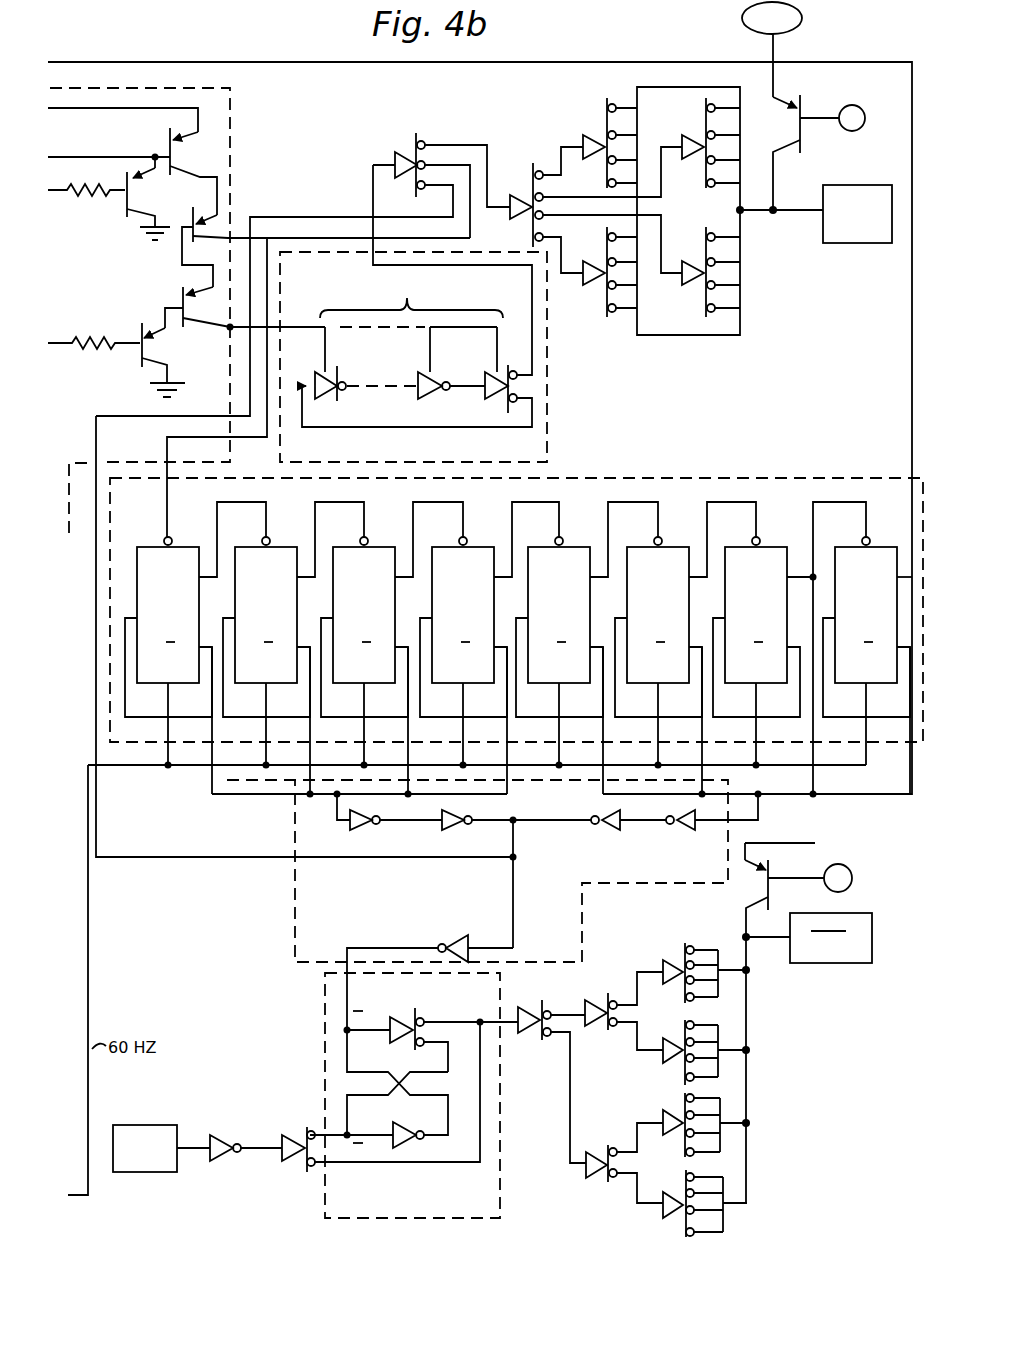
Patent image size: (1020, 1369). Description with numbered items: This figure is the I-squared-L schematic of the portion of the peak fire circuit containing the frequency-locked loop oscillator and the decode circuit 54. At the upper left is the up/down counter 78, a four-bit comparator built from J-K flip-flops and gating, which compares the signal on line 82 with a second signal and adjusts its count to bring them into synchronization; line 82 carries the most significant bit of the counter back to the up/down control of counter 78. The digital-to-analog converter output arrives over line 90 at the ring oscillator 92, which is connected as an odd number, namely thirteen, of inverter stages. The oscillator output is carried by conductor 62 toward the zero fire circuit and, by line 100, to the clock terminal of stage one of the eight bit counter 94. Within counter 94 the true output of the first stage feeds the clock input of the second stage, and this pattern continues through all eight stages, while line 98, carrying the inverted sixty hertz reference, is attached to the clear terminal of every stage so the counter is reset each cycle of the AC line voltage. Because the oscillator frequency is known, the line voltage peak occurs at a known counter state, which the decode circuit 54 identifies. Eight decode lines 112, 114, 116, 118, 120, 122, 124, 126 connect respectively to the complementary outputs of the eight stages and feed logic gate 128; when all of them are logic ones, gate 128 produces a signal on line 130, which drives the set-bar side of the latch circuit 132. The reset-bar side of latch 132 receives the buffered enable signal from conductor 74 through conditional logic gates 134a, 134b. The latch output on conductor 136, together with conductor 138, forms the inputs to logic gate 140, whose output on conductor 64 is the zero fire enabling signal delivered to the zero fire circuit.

The line 82 is at (333, 62).
The up/down counter 78 is at (231, 134).
The line 100 is at (472, 207).
The line 90 is at (300, 327).
The ring oscillator 92 is at (435, 357).
The 8 bit counter 94 is at (680, 473).
The conductor 62 is at (814, 126).
The decode line 112 is at (211, 750).
The decode line 114 is at (310, 750).
The decode line 116 is at (410, 750).
The decode line 118 is at (506, 750).
The decode line 120 is at (603, 750).
The decode line 122 is at (701, 750).
The decode line 124 is at (810, 750).
The decode line 126 is at (899, 793).
The line 98 is at (90, 937).
The decode circuit 54 is at (295, 915).
The logic gate 128 is at (448, 941).
The line 130 is at (350, 995).
The latch circuit 132 is at (505, 1178).
The conditional logic gate 134a is at (222, 1158).
The conditional logic gate 134b is at (292, 1158).
The conductor 136 is at (517, 1020).
The conductor 138 is at (419, 1166).
The logic gate 140 is at (525, 1034).
The conductor 74 is at (195, 1152).
The conductor 64 is at (793, 940).